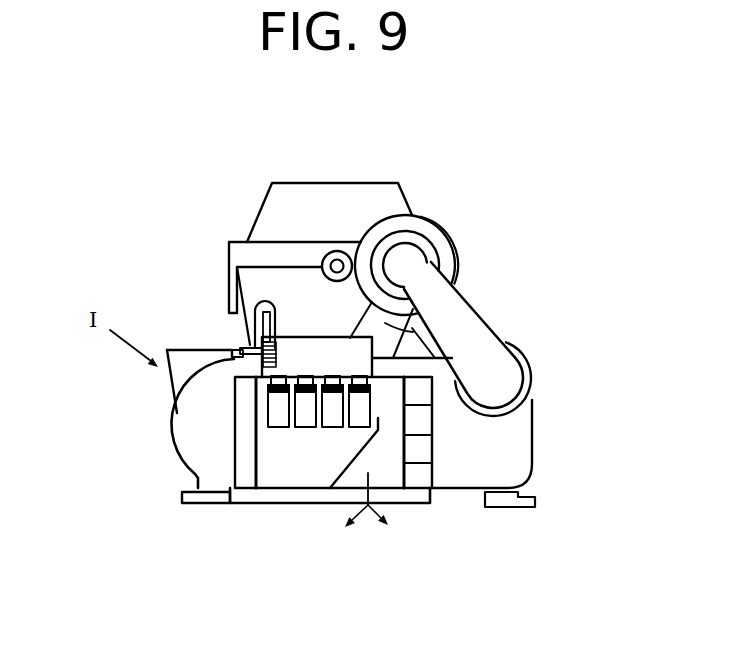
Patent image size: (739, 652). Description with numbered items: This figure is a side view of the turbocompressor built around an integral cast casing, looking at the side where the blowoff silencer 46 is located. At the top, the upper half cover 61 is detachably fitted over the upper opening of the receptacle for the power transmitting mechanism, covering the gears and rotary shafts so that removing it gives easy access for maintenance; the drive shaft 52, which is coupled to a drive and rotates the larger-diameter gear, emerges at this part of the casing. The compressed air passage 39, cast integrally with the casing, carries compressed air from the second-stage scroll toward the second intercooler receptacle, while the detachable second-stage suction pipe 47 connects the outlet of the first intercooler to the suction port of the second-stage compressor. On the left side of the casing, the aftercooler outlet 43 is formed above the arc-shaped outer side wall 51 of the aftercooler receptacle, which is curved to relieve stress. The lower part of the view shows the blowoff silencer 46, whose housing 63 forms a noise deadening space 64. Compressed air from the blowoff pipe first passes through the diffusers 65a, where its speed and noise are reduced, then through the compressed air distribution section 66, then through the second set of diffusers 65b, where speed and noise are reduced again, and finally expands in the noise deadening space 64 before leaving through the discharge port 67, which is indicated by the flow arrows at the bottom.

The compressed air passage 39 is at (452, 315).
The aftercooler outlet 43 is at (193, 347).
The blowoff silencer 46 is at (270, 478).
The second-stage suction pipe 47 is at (473, 349).
The outer side wall 51 is at (185, 382).
The drive shaft 52 is at (337, 257).
The upper half cover 61 is at (368, 195).
The housing 63 is at (257, 470).
The noise deadening space 64 is at (287, 486).
The diffusers 65a is at (317, 357).
The diffusers 65b is at (362, 433).
The compressed air distribution section 66 is at (343, 340).
The discharge port 67 is at (370, 496).